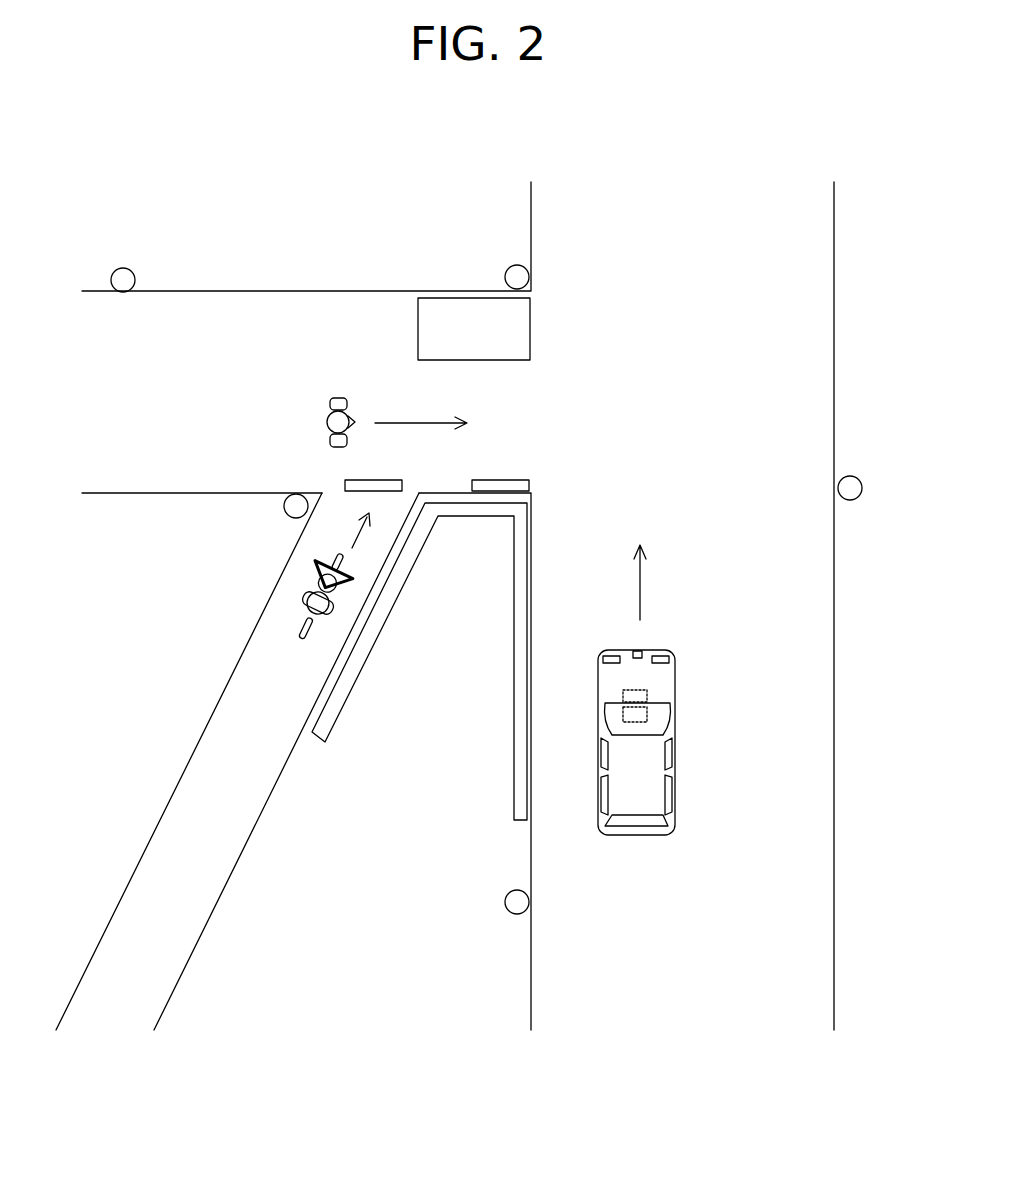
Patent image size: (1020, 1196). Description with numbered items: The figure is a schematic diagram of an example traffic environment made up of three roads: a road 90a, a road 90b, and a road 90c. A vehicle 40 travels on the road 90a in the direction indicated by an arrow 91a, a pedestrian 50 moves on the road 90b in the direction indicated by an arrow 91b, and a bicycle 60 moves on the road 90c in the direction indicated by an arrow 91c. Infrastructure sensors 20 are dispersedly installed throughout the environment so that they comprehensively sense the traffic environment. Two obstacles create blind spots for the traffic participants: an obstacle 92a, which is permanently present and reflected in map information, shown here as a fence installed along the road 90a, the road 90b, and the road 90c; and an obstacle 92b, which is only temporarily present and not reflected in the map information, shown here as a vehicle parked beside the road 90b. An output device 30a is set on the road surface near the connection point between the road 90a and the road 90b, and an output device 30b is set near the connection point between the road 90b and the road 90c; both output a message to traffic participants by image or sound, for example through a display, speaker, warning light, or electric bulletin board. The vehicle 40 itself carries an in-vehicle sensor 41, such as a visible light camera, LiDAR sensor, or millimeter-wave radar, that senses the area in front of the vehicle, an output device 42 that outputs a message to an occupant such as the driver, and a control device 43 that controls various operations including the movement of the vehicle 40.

The infrastructure sensor 20 is at (122, 268).
The output device 30a is at (507, 479).
The output device 30b is at (380, 479).
The vehicle 40 is at (677, 772).
The in-vehicle sensor 41 is at (641, 650).
The output device 42 is at (648, 716).
The control device 43 is at (648, 694).
The pedestrian 50 is at (329, 404).
The bicycle 60 is at (304, 594).
The road 90a is at (698, 968).
The road 90b is at (176, 415).
The road 90c is at (258, 783).
The arrow 91a is at (643, 566).
The arrow 91b is at (401, 422).
The arrow 91c is at (350, 533).
The obstacle 92a is at (471, 518).
The obstacle 92b is at (533, 324).